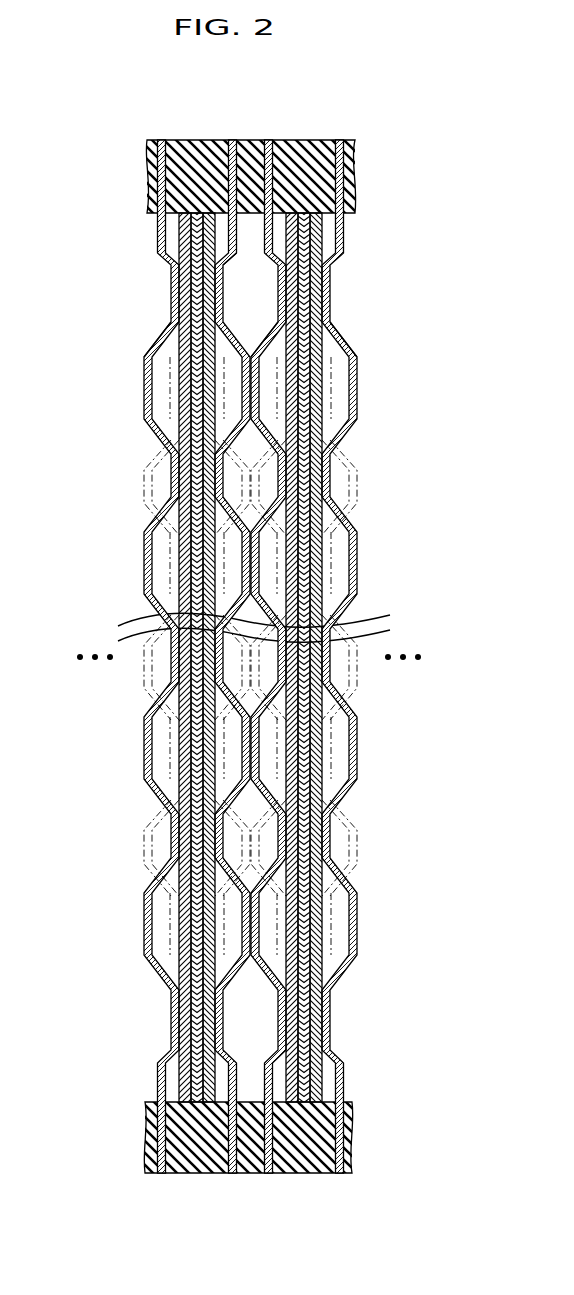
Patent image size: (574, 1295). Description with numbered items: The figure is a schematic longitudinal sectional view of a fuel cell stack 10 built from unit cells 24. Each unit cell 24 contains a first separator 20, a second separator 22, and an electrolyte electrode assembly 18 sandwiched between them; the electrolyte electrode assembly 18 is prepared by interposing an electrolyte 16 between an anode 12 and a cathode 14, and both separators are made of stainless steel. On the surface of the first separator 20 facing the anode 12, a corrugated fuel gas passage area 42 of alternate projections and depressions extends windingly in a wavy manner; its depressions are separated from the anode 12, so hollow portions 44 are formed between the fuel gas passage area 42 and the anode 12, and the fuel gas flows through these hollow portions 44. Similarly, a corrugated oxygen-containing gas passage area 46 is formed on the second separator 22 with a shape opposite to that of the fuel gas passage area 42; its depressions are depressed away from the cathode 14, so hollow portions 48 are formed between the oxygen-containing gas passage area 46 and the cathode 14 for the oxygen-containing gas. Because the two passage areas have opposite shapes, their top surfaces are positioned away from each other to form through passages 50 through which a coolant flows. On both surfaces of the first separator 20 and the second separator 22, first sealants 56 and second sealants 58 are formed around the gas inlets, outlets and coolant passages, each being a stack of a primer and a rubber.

The stack 10 is at (84, 137).
The anode 12 is at (180, 938).
The cathode 14 is at (203, 1000).
The electrolyte 16 is at (192, 967).
The electrolyte electrode assembly 18 is at (247, 657).
The first separator 20 is at (164, 1090).
The second separator 22 is at (218, 1050).
The unit cell 24 is at (246, 656).
The fuel gas passage area 42 is at (158, 341).
The hollow portions 44 is at (165, 372).
The oxygen-containing gas passage area 46 is at (226, 266).
The hollow portions 48 is at (232, 392).
The through passages 50 is at (263, 482).
The first sealants 56 is at (153, 140).
The second sealants 58 is at (207, 140).